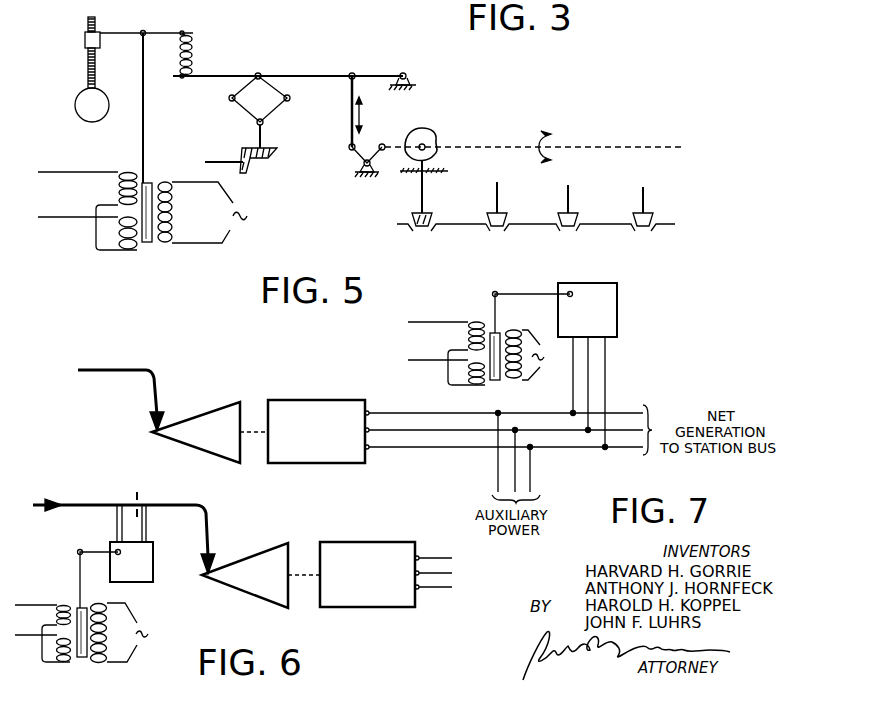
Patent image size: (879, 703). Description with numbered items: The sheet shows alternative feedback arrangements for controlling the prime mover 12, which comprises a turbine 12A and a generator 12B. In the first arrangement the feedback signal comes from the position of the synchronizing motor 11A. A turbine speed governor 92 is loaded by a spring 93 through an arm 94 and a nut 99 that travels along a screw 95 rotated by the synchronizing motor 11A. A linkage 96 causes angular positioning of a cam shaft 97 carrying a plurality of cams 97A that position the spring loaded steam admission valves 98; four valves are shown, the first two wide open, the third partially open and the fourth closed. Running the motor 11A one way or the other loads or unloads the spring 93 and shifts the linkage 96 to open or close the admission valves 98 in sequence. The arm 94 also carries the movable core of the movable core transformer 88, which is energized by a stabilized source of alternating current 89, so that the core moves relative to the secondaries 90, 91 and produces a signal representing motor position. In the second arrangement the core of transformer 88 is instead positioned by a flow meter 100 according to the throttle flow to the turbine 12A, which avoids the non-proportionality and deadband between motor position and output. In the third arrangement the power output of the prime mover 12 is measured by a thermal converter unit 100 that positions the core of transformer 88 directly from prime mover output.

In FIG. 3, the synchronizing motor 11A is at (77, 112).
In FIG. 5, the prime mover 12 is at (262, 394).
In FIG. 6, the prime mover 12 is at (308, 535).
In FIG. 5, the turbine 12A is at (215, 408).
In FIG. 6, the turbine 12A is at (273, 542).
In FIG. 5, the generator 12B is at (348, 400).
In FIG. 6, the generator 12B is at (388, 542).
In FIG. 3, the movable core transformer 88 is at (138, 160).
In FIG. 5, the movable core transformer 88 is at (483, 314).
In FIG. 6, the movable core transformer 88 is at (70, 595).
In FIG. 3, the stabilized source of A.-C. current 89 is at (245, 218).
In FIG. 5, the stabilized source of A.-C. current 89 is at (535, 358).
In FIG. 6, the stabilized source of A.-C. current 89 is at (145, 624).
In FIG. 3, the secondary 90 is at (118, 183).
In FIG. 3, the secondary 91 is at (118, 235).
In FIG. 3, the turbine speed governor 92 is at (240, 112).
In FIG. 3, the spring 93 is at (193, 58).
In FIG. 3, the arm 94 is at (125, 33).
In FIG. 3, the screw 95 is at (88, 63).
In FIG. 3, the linkage 96 is at (312, 75).
In FIG. 3, the cam shaft 97 is at (603, 147).
In FIG. 3, the cams 97A is at (425, 132).
In FIG. 3, the steam admission valves 98 is at (432, 220).
In FIG. 3, the nut 99 is at (85, 37).
In FIG. 5, the flow meter 100 is at (617, 307).
In FIG. 6, the flow meter 100 is at (153, 552).